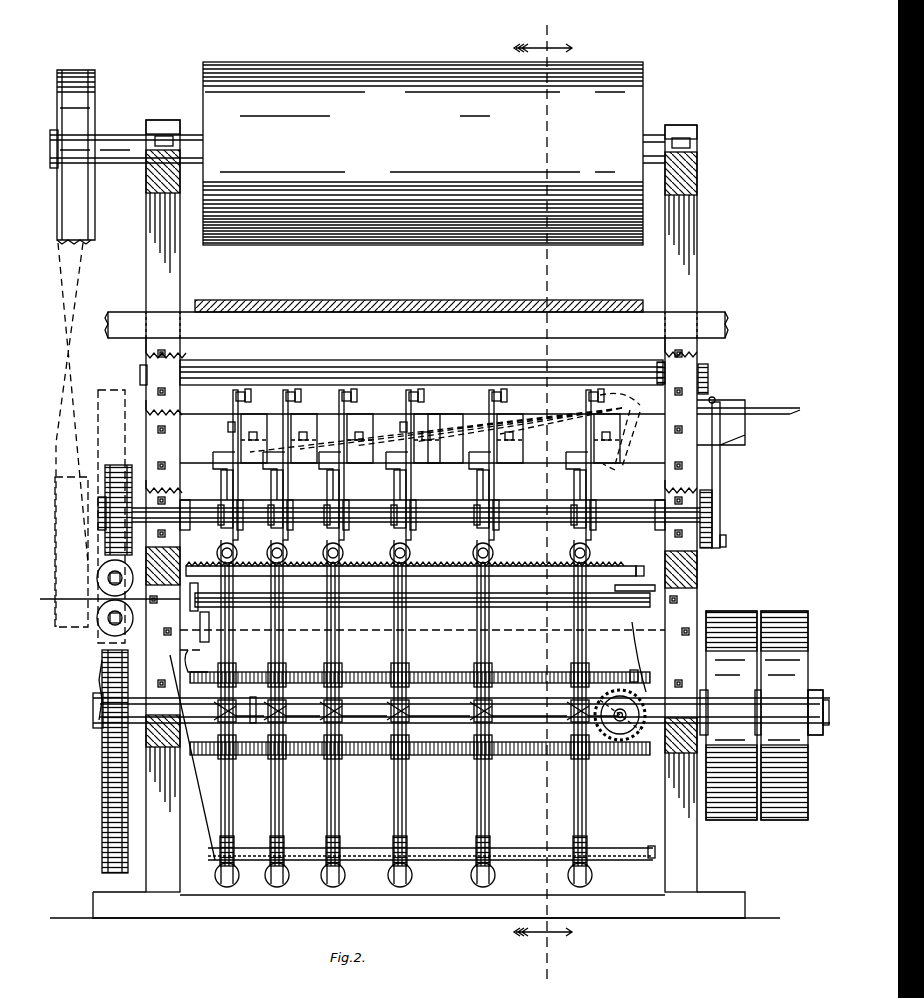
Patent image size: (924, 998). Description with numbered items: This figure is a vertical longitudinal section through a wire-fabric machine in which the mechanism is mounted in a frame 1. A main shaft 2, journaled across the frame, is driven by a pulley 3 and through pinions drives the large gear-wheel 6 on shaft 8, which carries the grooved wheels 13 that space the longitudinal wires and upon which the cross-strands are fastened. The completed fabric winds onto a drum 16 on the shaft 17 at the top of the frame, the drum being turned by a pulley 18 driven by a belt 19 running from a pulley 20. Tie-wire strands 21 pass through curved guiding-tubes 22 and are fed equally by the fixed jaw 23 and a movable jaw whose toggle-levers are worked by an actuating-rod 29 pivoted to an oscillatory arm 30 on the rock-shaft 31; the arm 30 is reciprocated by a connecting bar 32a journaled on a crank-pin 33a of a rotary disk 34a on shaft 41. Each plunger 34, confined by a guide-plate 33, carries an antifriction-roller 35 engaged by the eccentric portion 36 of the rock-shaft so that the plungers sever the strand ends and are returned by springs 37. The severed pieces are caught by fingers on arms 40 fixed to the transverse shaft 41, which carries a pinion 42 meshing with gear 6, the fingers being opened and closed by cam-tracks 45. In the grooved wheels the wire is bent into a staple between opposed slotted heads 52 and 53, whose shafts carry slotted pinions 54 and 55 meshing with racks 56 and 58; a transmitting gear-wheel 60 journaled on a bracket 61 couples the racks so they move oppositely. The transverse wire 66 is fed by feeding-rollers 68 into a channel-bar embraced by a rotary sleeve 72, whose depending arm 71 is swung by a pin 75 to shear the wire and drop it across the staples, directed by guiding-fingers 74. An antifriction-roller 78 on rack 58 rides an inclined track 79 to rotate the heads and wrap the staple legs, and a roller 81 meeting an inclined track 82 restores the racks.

The frame 1 is at (710, 282).
The main shaft 2 is at (820, 700).
The pulley 3 is at (745, 612).
The large gear-wheel 6 is at (100, 765).
The shaft 8 is at (93, 707).
The grooved wheels 13 is at (236, 828).
The drum 16 is at (423, 153).
The shaft 17 is at (110, 140).
The pulley 18 is at (92, 86).
The belt 19 is at (90, 238).
The pulley 20 is at (56, 503).
The strands 21 is at (213, 466).
The curved guiding-tubes 22 is at (442, 441).
The fixed jaw 23 is at (745, 418).
The actuating-rod 29 is at (712, 390).
The oscillatory arm 30 is at (716, 400).
The rock-shaft 31 is at (140, 374).
The connecting bar 32a is at (722, 478).
The guide-plate 33 is at (228, 427).
The crank-pin 33a is at (728, 541).
The plunger 34 is at (403, 465).
The rotary disk 34a is at (714, 518).
The antifriction-roller 35 is at (245, 395).
The eccentric portion 36 is at (421, 365).
The springs 37 is at (534, 418).
The arms 40 is at (476, 528).
The transverse shaft 41 is at (100, 508).
The pinion 42 is at (122, 465).
The cam-tracks 45 is at (242, 534).
The slotted head 52 is at (427, 729).
The slotted head 53 is at (418, 706).
The slotted pinion 54 is at (554, 670).
The slotted pinion 55 is at (486, 756).
The rack 56 is at (422, 678).
The rack / gear-teeth 58 is at (640, 560).
The transmitting gear-wheel 60 is at (620, 740).
The bracket 61 is at (618, 739).
The transverse wire 66 is at (211, 671).
The feeding-rollers 68 is at (96, 579).
The depending arm 71 is at (189, 607).
The rotary sleeve 72 is at (422, 612).
The guiding-fingers 74 is at (401, 704).
The pin 75 is at (205, 640).
The antifriction-roller 78 is at (196, 660).
The inclined track 79 is at (200, 760).
The antifriction roller 81 is at (638, 572).
The inclined track 82 is at (636, 636).